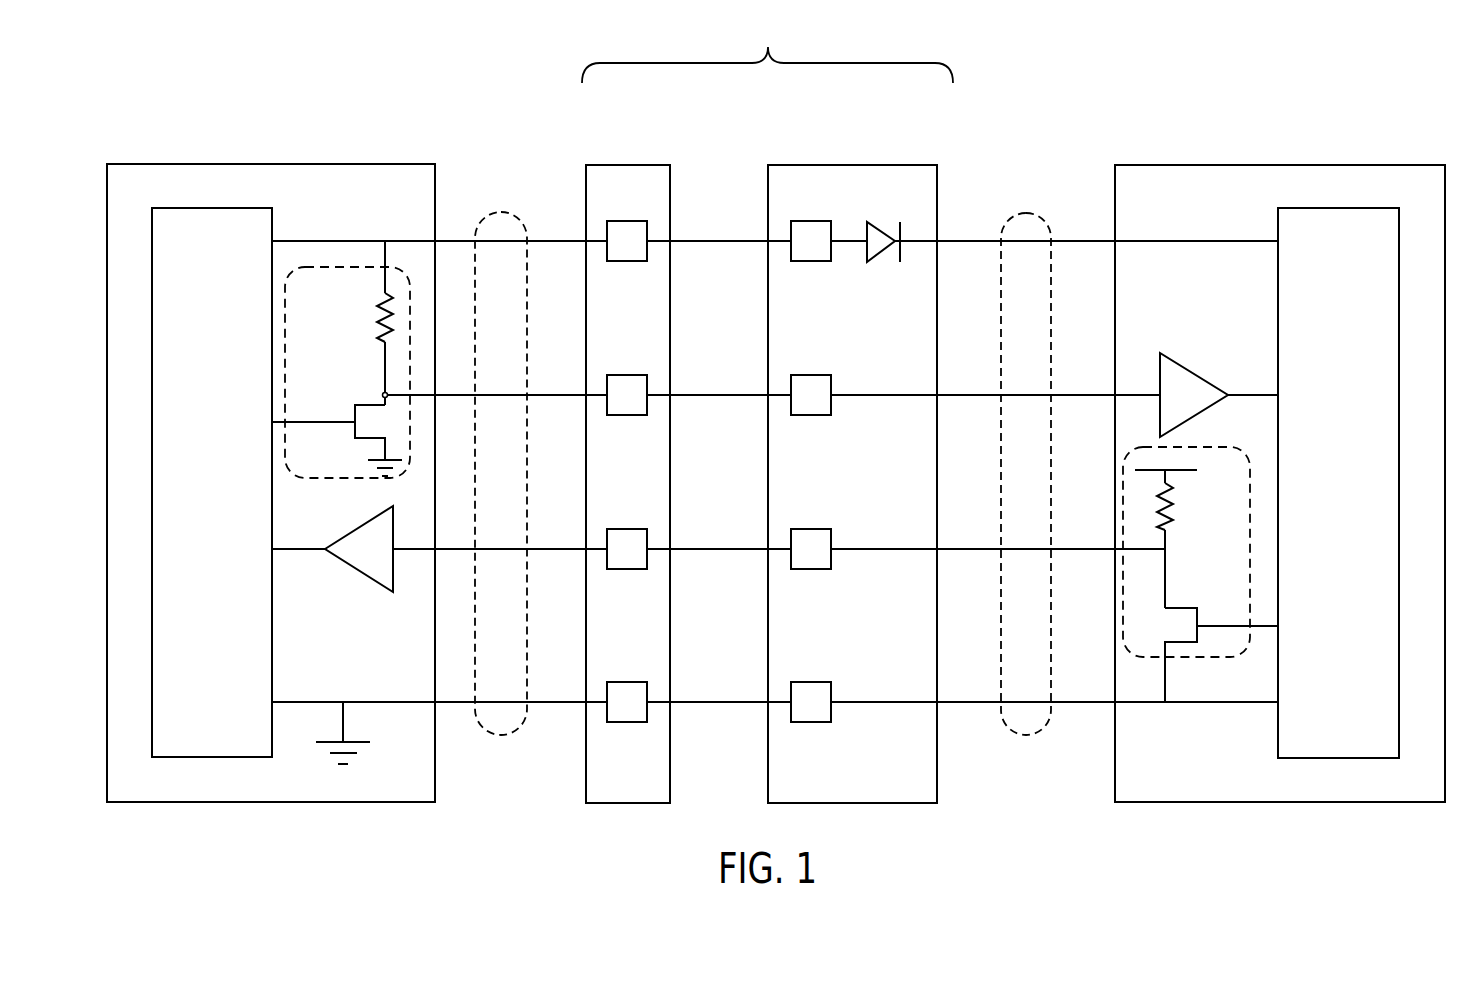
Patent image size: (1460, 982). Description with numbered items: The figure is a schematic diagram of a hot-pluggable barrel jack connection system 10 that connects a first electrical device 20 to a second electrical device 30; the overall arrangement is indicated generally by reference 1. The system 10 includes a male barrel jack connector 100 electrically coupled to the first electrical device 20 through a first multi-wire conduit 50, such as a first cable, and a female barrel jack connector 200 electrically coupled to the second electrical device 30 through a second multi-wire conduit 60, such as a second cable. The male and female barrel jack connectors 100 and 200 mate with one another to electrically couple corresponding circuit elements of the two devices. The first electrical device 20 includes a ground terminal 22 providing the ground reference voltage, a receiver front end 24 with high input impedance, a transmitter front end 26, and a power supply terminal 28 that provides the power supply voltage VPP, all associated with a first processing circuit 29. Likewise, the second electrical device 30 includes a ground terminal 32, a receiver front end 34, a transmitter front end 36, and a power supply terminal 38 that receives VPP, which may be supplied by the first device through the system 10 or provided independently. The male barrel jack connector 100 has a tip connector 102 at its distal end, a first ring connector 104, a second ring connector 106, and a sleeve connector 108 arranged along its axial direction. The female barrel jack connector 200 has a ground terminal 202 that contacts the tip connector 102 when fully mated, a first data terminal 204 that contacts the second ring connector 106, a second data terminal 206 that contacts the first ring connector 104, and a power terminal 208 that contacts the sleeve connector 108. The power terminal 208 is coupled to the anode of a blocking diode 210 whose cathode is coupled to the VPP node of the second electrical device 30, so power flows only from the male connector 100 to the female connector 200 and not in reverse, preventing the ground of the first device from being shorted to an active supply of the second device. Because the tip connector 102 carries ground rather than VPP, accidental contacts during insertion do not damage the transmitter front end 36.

The communication system 1 is at (1352, 92).
The hot-pluggable barrel jack connection system 10 is at (768, 47).
The first electrical device 20 is at (332, 164).
The ground terminal 22 is at (372, 702).
The receiver front end 24 is at (356, 540).
The transmitter front end 26 is at (310, 267).
The power supply terminal 28 is at (352, 241).
The first processing circuit 29 is at (208, 208).
The second electrical device 30 is at (1245, 165).
The ground terminal 32 is at (1143, 702).
The receiver front end 34 is at (1200, 371).
The transmitter front end 36 is at (1248, 450).
The power supply terminal 38 is at (1198, 241).
The first multi-wire conduit 50 is at (498, 212).
The second multi-wire conduit 60 is at (1025, 213).
The male barrel jack connector 100 is at (630, 165).
The tip connector 102 is at (627, 682).
The first ring connector 104 is at (627, 529).
The second ring connector 106 is at (630, 375).
The sleeve connector 108 is at (622, 261).
The female barrel jack connector 200 is at (850, 165).
The ground terminal 202 is at (811, 682).
The first data terminal 204 is at (811, 375).
The second data terminal 206 is at (811, 529).
The power terminal 208 is at (806, 261).
The blocking diode 210 is at (880, 258).